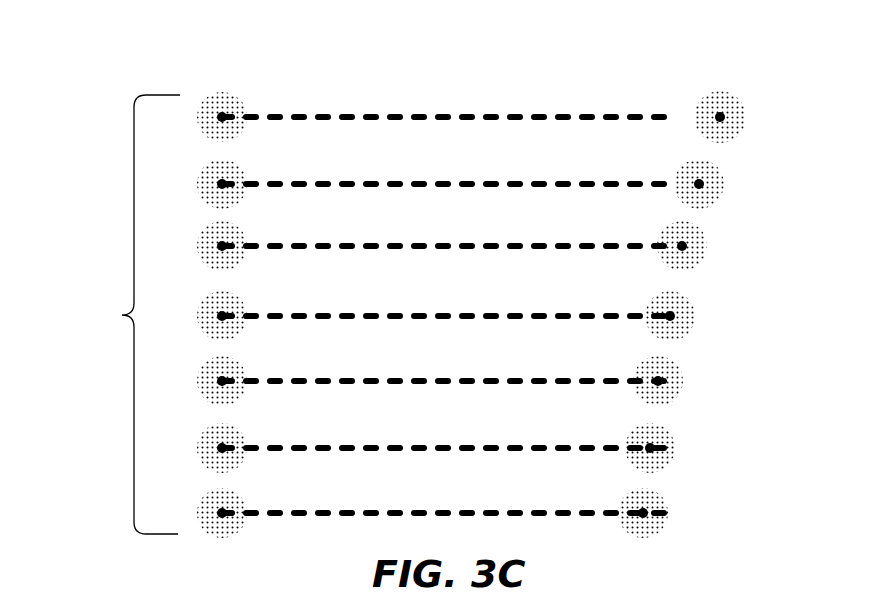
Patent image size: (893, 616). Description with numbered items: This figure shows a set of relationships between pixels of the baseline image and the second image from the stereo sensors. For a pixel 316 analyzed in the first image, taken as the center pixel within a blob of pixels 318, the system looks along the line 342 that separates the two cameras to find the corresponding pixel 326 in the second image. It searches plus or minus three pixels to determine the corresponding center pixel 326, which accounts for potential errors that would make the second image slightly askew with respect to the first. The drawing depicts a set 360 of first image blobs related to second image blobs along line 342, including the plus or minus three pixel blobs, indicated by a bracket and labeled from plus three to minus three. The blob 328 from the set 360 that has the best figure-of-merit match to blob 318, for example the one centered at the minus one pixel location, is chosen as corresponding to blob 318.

The pixel 316 is at (224, 112).
The blob of pixels 318 is at (207, 93).
The corresponding pixel 326 is at (696, 322).
The blob 328 is at (693, 302).
The line 342 is at (495, 281).
The set of first image blobs related to second image blobs 360 is at (97, 314).